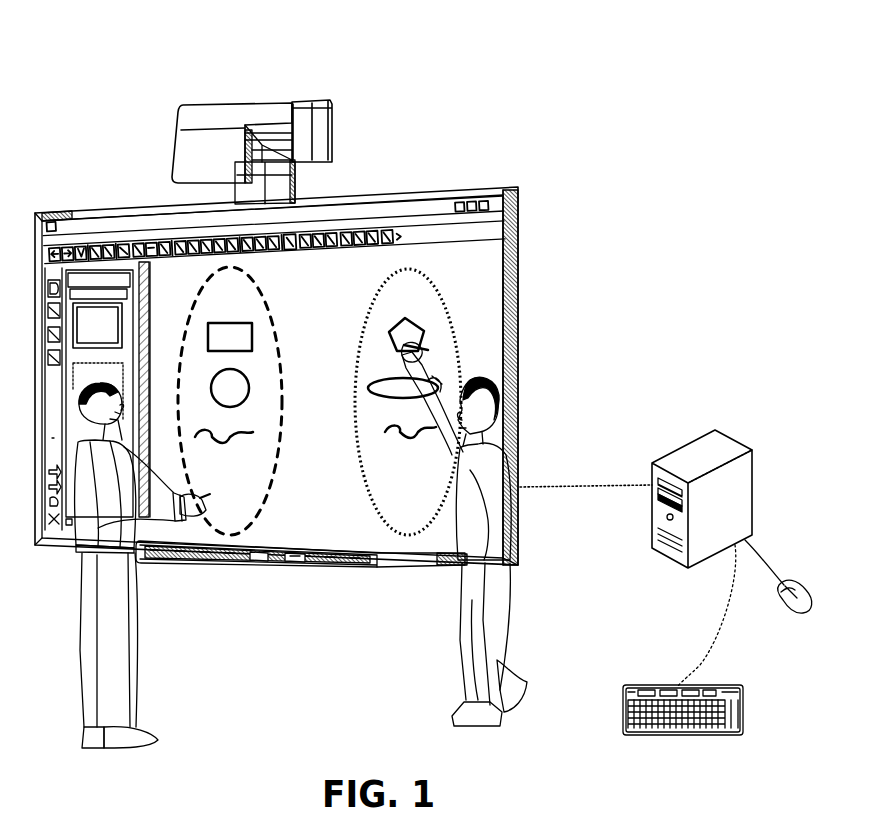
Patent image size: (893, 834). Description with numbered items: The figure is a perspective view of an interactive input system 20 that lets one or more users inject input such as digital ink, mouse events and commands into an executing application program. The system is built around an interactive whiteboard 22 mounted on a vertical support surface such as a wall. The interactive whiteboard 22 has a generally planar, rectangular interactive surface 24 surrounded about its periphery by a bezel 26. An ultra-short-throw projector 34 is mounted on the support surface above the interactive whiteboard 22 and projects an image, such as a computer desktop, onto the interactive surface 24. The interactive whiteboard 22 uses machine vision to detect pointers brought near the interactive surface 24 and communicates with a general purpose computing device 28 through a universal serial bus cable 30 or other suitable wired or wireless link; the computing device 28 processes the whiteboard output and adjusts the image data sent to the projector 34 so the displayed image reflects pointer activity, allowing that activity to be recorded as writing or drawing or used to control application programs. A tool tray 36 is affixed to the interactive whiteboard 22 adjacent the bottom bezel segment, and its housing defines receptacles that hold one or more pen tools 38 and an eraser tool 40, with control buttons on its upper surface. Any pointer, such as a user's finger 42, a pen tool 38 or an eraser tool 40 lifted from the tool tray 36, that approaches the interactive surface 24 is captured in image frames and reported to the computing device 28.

The interactive input system 20 is at (624, 89).
The interactive whiteboard 22 is at (522, 227).
The interactive surface 24 is at (495, 315).
The bezel 26 is at (510, 366).
The general purpose computing device 28 is at (735, 442).
The universal serial bus cable 30 is at (583, 490).
The ultra-short-throw projector 34 is at (230, 145).
The tool tray 36 is at (168, 562).
The pen tool 38 is at (430, 346).
The eraser tool 40 is at (258, 563).
The user's finger 42 is at (200, 506).